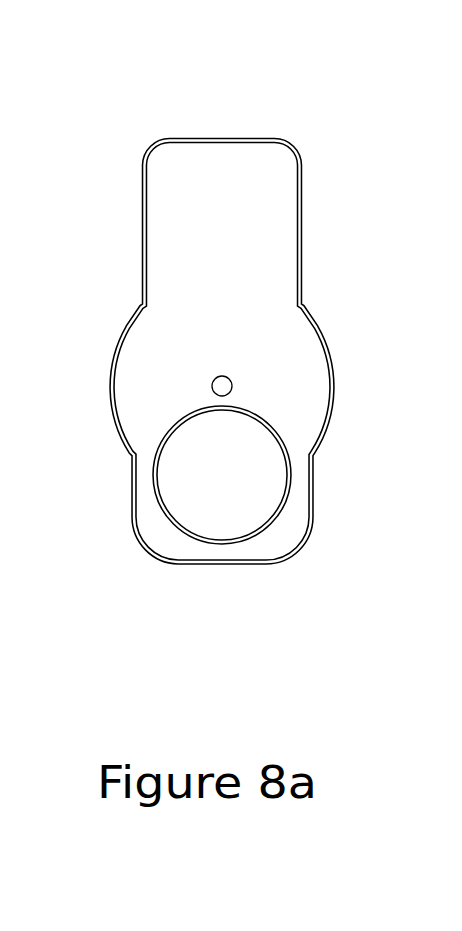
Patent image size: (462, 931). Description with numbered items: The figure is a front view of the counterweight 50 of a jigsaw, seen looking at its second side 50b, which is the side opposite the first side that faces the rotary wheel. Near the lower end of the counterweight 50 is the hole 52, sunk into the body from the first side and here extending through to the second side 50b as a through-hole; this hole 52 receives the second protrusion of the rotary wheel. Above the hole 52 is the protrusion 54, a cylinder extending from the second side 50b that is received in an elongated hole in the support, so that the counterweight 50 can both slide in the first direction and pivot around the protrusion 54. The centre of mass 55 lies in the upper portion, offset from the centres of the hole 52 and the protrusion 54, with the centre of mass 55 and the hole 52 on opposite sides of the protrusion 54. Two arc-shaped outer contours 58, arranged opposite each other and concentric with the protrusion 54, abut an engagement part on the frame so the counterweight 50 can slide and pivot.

The counterweight 50 is at (198, 153).
The second side 50b is at (285, 188).
The centre of mass 55 is at (222, 258).
The arc-shaped outer contour 58 is at (325, 350).
The protrusion 54 is at (219, 388).
The hole 52 is at (222, 476).